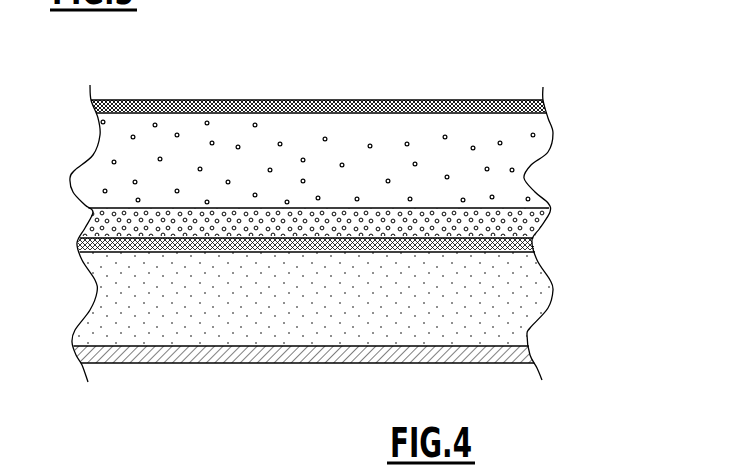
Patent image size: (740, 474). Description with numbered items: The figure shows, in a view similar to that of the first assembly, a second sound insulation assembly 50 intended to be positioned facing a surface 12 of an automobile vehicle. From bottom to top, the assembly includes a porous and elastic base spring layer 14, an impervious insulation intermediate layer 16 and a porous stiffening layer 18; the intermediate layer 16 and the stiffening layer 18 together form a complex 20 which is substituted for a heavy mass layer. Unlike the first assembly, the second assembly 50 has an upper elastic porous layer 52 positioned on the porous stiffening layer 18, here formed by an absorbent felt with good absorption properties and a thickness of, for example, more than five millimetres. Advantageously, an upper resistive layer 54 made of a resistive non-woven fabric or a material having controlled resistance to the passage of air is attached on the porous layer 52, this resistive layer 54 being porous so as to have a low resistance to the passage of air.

The second sound insulation assembly 50 is at (521, 60).
The upper resistive layer 54 is at (313, 100).
The upper elastic porous layer 52 is at (531, 167).
The complex 20 is at (67, 212).
The stiffening layer 18 is at (543, 223).
The impervious insulation intermediate layer 16 is at (533, 248).
The porous and elastic base spring layer 14 is at (535, 317).
The surface 12 is at (353, 363).